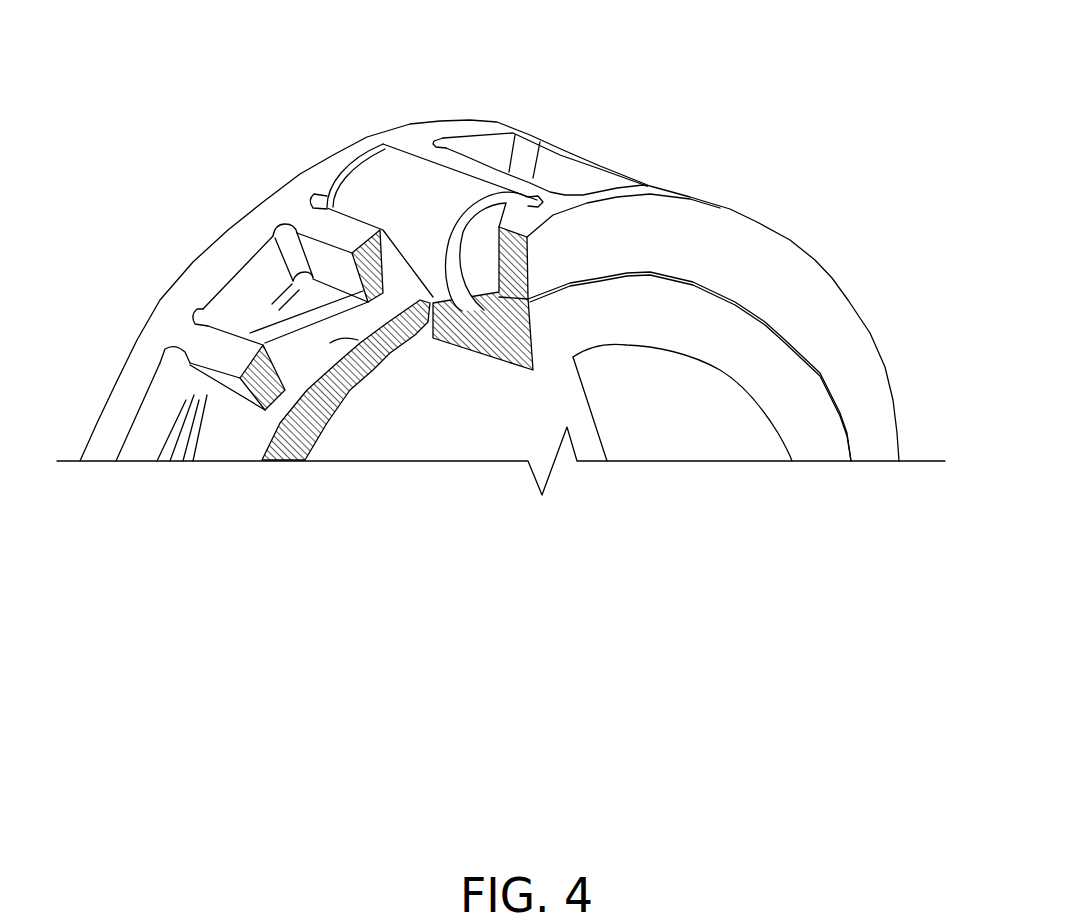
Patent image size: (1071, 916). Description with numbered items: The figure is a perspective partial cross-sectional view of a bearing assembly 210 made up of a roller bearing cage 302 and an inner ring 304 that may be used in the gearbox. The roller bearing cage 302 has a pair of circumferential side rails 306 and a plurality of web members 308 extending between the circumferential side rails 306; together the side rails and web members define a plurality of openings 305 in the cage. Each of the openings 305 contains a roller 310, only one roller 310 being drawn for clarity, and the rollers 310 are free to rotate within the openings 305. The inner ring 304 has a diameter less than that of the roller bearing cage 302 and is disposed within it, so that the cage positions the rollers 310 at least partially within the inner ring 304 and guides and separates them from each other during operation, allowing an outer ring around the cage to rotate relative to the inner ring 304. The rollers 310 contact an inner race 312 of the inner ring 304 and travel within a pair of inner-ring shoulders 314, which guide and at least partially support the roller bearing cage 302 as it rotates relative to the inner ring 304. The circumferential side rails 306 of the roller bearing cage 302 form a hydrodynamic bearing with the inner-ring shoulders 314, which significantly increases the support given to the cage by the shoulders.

The bearing assembly 210 is at (289, 70).
The roller bearing cage 302 is at (432, 132).
The inner ring 304 is at (720, 435).
The openings 305 is at (562, 178).
The circumferential side rails 306 is at (247, 292).
The web members 308 is at (497, 175).
The roller 310 is at (427, 277).
The inner race 312 is at (362, 345).
The inner-ring shoulders 314 is at (520, 353).